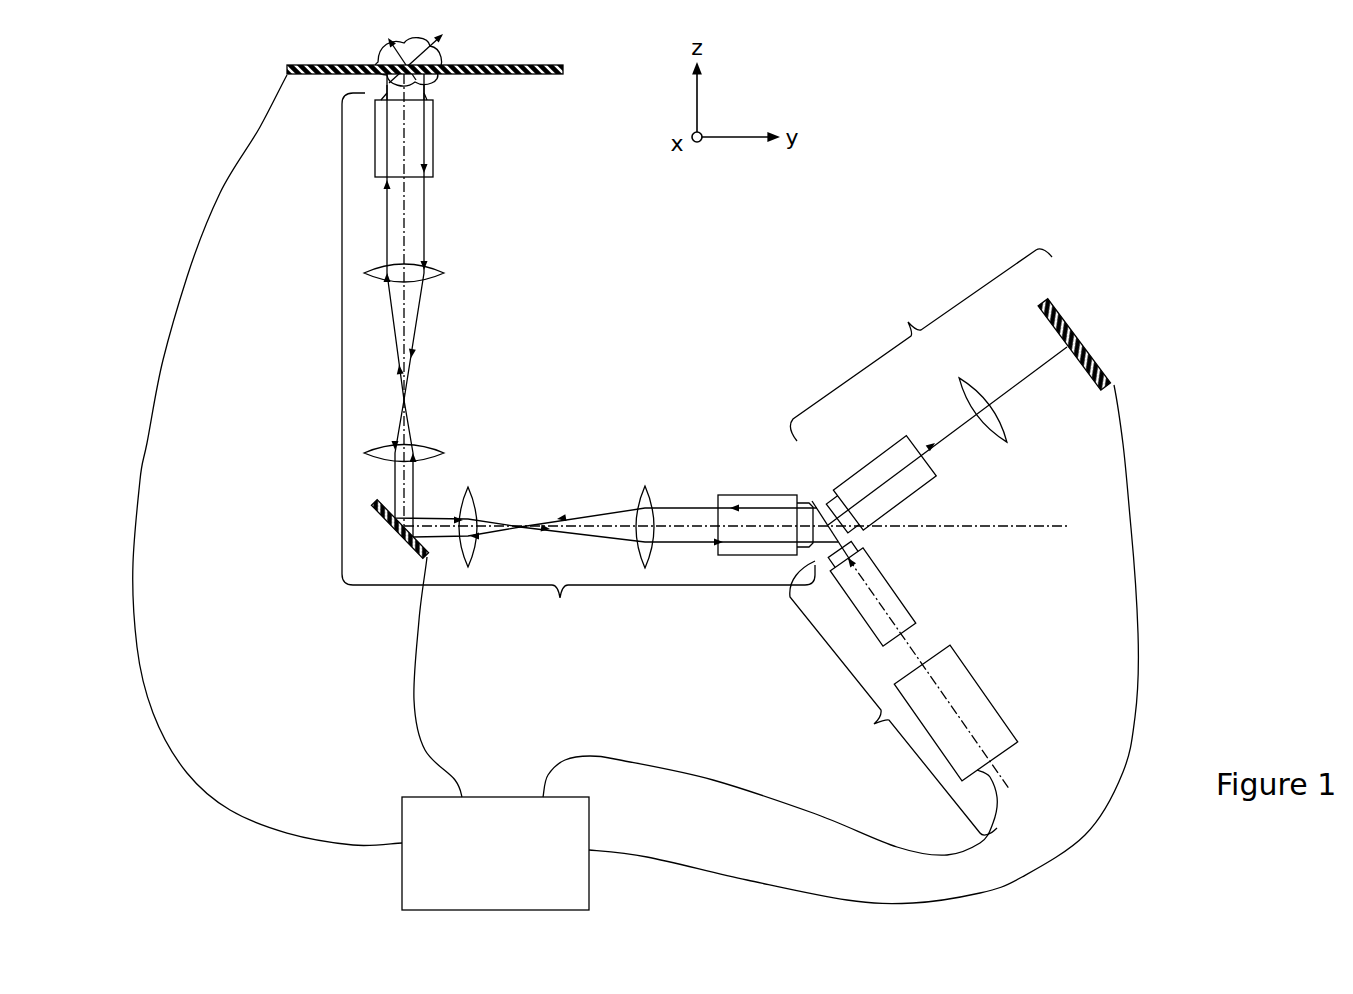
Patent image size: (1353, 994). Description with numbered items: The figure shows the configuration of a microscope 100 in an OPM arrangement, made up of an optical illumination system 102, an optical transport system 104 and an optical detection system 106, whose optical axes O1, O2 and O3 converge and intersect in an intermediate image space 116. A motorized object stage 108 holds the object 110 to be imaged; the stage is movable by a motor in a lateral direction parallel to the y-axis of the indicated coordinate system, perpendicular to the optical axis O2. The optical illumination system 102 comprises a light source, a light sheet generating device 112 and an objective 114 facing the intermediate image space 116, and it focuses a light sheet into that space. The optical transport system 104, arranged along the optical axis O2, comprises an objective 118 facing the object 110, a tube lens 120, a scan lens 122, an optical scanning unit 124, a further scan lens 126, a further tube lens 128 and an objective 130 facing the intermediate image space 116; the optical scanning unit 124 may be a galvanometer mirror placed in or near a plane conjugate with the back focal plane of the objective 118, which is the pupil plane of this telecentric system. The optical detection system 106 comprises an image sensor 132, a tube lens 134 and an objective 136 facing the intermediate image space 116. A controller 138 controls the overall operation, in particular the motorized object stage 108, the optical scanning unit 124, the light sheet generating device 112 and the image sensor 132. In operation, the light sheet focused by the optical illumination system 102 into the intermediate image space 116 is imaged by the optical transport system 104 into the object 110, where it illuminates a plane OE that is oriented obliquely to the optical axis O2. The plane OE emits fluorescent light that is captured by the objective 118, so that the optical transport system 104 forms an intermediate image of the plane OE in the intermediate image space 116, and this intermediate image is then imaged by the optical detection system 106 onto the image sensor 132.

The microscope 100 is at (914, 198).
The optical illumination system 102 is at (893, 698).
The optical transport system 104 is at (578, 362).
The optical detection system 106 is at (921, 345).
The motorized object stage 108 is at (548, 76).
The object 110 is at (437, 62).
The light sheet generating device 112 is at (1002, 715).
The objective 114 is at (918, 608).
The intermediate image space 116 is at (835, 533).
The objective 118 is at (437, 160).
The tube lens 120 is at (448, 273).
The scan lens 122 is at (440, 455).
The optical scanning unit 124 is at (399, 540).
The scan lens 126 is at (478, 505).
The tube lens 128 is at (653, 492).
The objective 130 is at (770, 493).
The image sensor 132 is at (1047, 308).
The tube lens 134 is at (972, 377).
The objective 136 is at (877, 453).
The controller 138 is at (589, 900).
The optical axis of the optical illumination system O1 is at (918, 650).
The optical axis of the optical transport system O2 is at (687, 523).
The optical axis of the optical detection system O3 is at (1042, 378).
The plane OE is at (383, 52).